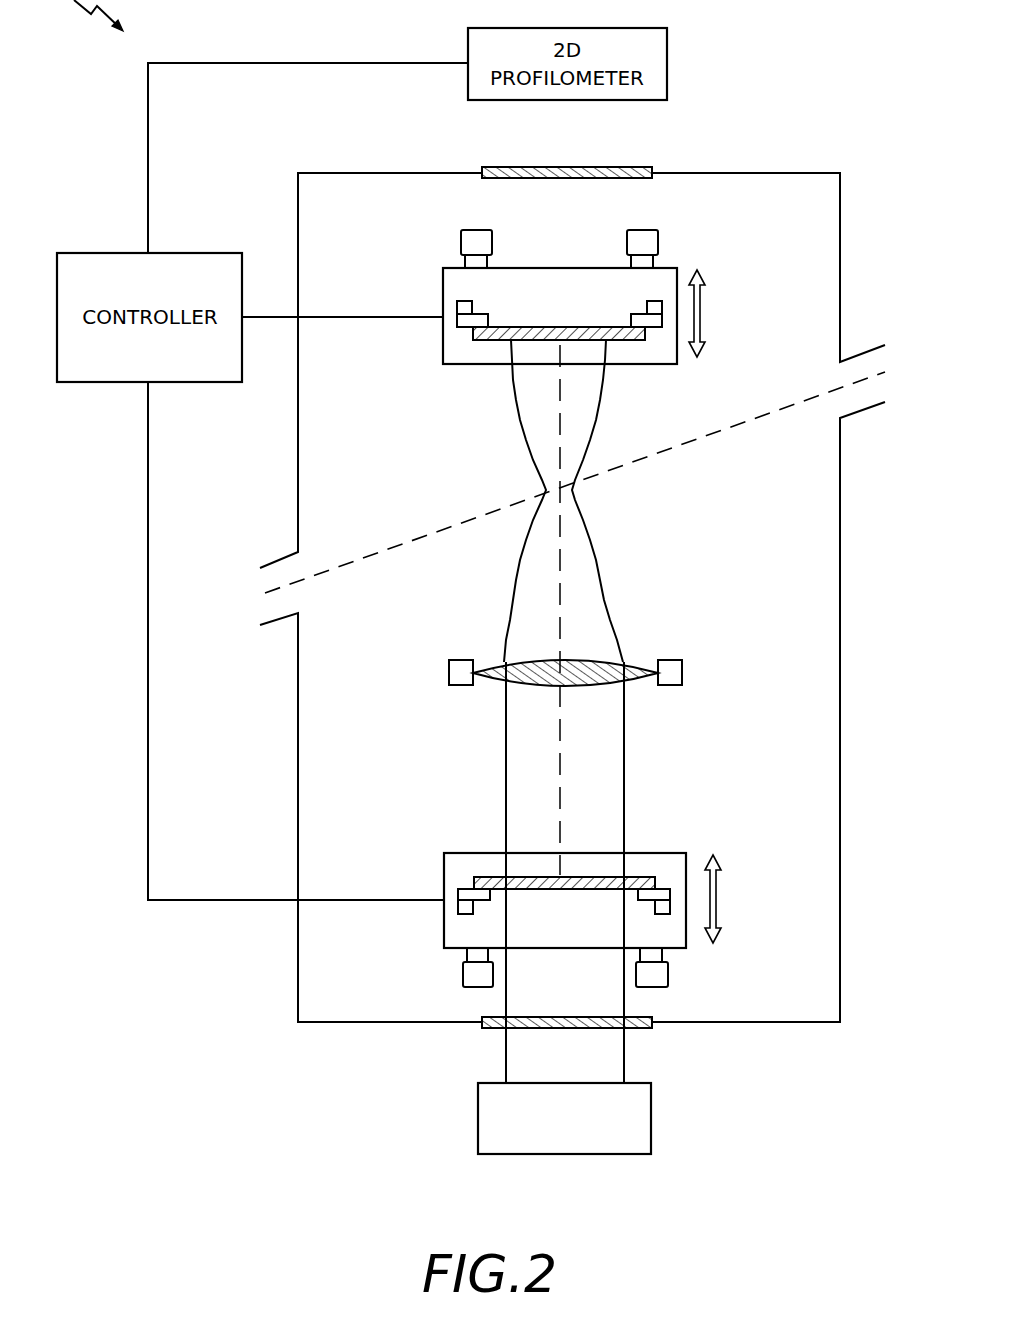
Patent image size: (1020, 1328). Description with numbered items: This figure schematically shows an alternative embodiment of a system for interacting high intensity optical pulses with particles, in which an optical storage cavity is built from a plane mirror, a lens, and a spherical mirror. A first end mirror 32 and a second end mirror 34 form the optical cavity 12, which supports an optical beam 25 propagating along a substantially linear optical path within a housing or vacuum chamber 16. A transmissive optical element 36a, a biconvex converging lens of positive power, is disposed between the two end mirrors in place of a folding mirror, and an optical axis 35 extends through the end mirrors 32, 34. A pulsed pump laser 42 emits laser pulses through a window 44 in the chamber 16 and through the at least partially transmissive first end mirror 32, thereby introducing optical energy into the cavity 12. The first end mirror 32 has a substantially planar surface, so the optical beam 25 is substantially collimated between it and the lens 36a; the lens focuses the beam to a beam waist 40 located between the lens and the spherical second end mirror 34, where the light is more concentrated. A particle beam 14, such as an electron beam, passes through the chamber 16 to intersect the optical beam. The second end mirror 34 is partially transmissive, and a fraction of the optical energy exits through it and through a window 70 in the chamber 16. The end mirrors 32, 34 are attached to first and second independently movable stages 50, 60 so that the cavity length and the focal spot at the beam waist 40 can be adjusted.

The optical cavity 12 is at (668, 568).
The particle beam 14 is at (366, 558).
The chamber 16 is at (840, 838).
The optical beam 25 is at (538, 588).
The first end mirror 32 is at (488, 877).
The second end mirror 34 is at (488, 341).
The optical axis 35 is at (562, 787).
The transmissive optical element 36a is at (496, 661).
The beam waist 40 is at (575, 495).
The pump laser 42 is at (478, 1116).
The window 44 is at (640, 1028).
The first movable stage 50 is at (444, 928).
The second movable stage 60 is at (443, 283).
The window 70 is at (627, 165).